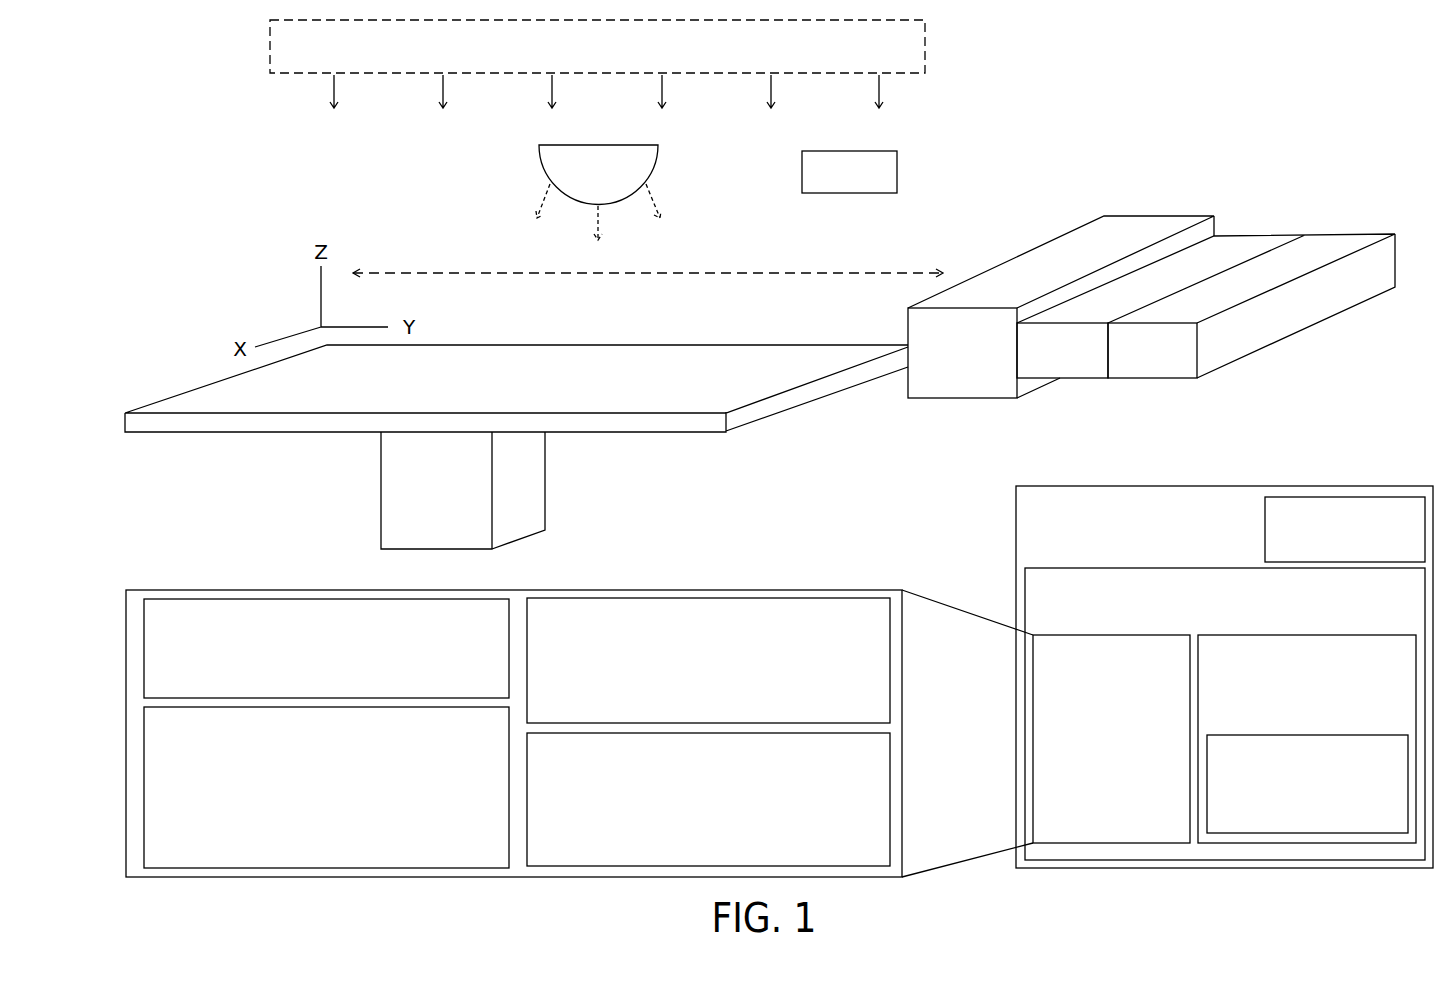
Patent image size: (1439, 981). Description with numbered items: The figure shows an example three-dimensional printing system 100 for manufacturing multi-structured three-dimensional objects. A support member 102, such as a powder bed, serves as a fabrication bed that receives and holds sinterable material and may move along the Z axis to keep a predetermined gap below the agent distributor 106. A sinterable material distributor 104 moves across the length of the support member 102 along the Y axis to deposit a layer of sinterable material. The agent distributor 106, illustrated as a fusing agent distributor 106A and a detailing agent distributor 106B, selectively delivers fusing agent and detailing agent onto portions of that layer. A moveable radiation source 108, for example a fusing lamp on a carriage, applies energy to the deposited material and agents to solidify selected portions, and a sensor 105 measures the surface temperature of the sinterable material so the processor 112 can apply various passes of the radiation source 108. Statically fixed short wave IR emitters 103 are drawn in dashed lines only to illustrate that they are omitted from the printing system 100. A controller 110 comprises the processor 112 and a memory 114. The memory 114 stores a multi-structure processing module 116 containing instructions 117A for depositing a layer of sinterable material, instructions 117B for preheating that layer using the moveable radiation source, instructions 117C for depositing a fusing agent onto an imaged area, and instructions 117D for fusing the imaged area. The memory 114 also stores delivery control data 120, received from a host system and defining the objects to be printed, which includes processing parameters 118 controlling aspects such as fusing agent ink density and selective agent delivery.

The 3D printing system 100 is at (123, 49).
The support member 102 is at (699, 363).
The statically fixed short wave IR emitters 103 is at (578, 56).
The sinterable material distributor 104 is at (1152, 225).
The sensor 105 is at (833, 151).
The agent distributor 106 is at (1206, 276).
The fusing agent distributor 106A is at (1062, 350).
The detailing agent distributor 106B is at (1152, 350).
The moveable radiation source 108 is at (578, 182).
The controller 110 is at (1061, 551).
The processor 112 is at (1327, 559).
The memory 114 is at (1072, 632).
The multi-structure processing module 116 is at (1094, 811).
The instructions for depositing a layer of sinterable material 117A is at (302, 689).
The instructions for preheating the layer of sinterable material using a moveable ra 117B is at (302, 857).
The instructions for depositing a fusing agent onto an imaged area 117C is at (683, 717).
The instructions for fusing the imaged area using the moveable radiation source 117D is at (683, 856).
The processing parameters 118 is at (1289, 827).
The delivery control data 120 is at (1289, 728).